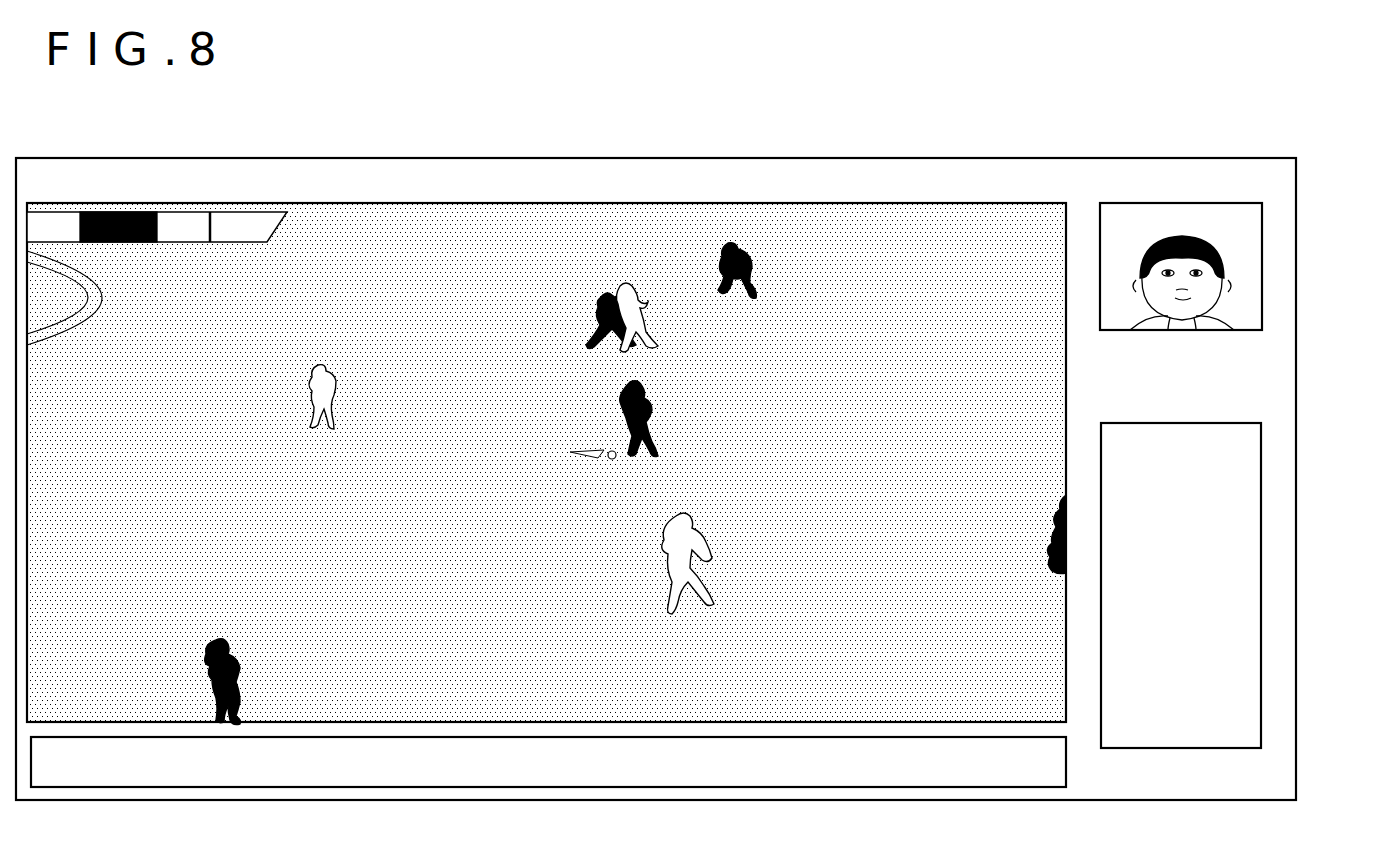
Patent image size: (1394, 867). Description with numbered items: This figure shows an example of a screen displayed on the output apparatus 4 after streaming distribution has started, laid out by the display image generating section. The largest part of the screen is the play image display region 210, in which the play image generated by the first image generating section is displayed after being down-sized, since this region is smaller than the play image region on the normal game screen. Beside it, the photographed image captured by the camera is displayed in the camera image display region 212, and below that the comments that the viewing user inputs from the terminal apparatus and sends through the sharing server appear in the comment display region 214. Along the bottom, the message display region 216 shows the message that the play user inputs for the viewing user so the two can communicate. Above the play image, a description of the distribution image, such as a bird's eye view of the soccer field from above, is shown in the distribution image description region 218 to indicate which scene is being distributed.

The output apparatus 4 is at (704, 477).
The play image display region 210 is at (546, 201).
The camera image display region 212 is at (1262, 267).
The comment display region 214 is at (1261, 585).
The message display region 216 is at (1066, 767).
The distribution image description region 218 is at (1028, 159).